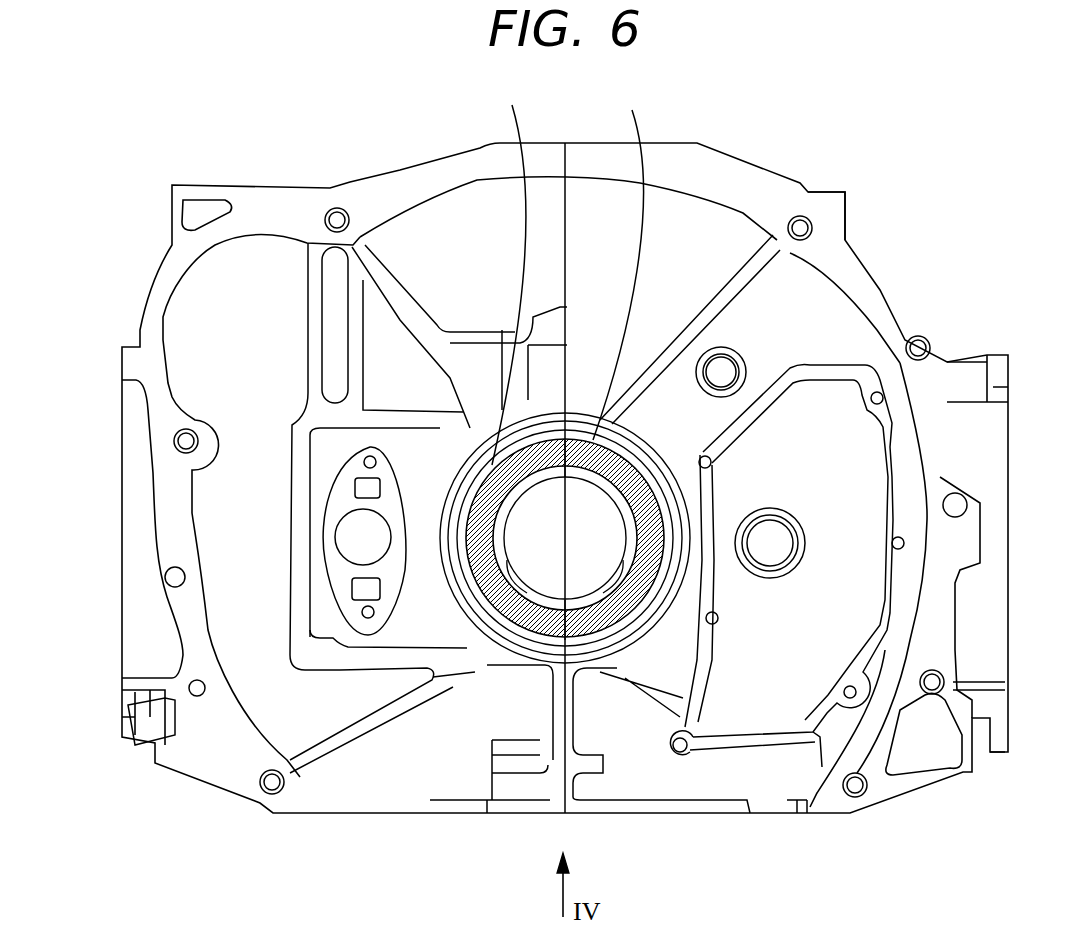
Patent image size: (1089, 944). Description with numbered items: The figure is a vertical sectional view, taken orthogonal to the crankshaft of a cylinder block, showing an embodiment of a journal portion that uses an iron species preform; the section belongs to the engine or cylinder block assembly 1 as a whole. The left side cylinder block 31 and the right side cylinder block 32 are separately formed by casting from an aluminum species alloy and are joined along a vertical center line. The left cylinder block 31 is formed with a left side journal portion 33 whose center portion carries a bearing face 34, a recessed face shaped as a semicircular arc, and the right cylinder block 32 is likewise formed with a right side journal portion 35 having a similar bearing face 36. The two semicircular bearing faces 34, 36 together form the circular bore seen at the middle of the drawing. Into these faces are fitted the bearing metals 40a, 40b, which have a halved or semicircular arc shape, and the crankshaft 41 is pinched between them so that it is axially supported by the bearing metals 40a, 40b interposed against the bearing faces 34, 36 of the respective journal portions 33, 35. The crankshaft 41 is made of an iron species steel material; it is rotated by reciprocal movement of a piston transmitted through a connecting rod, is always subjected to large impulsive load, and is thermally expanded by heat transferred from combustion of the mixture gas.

The engine 1 is at (568, 272).
The left side cylinder block 31 is at (757, 176).
The right side cylinder block 32 is at (367, 178).
The left side journal portion 33 is at (690, 648).
The bearing face 34 is at (630, 522).
The right side journal portion 35 is at (445, 603).
The bearing face 36 is at (497, 540).
The bearing metal 40a is at (593, 590).
The bearing metal 40b is at (515, 595).
The crankshaft 41 is at (548, 582).